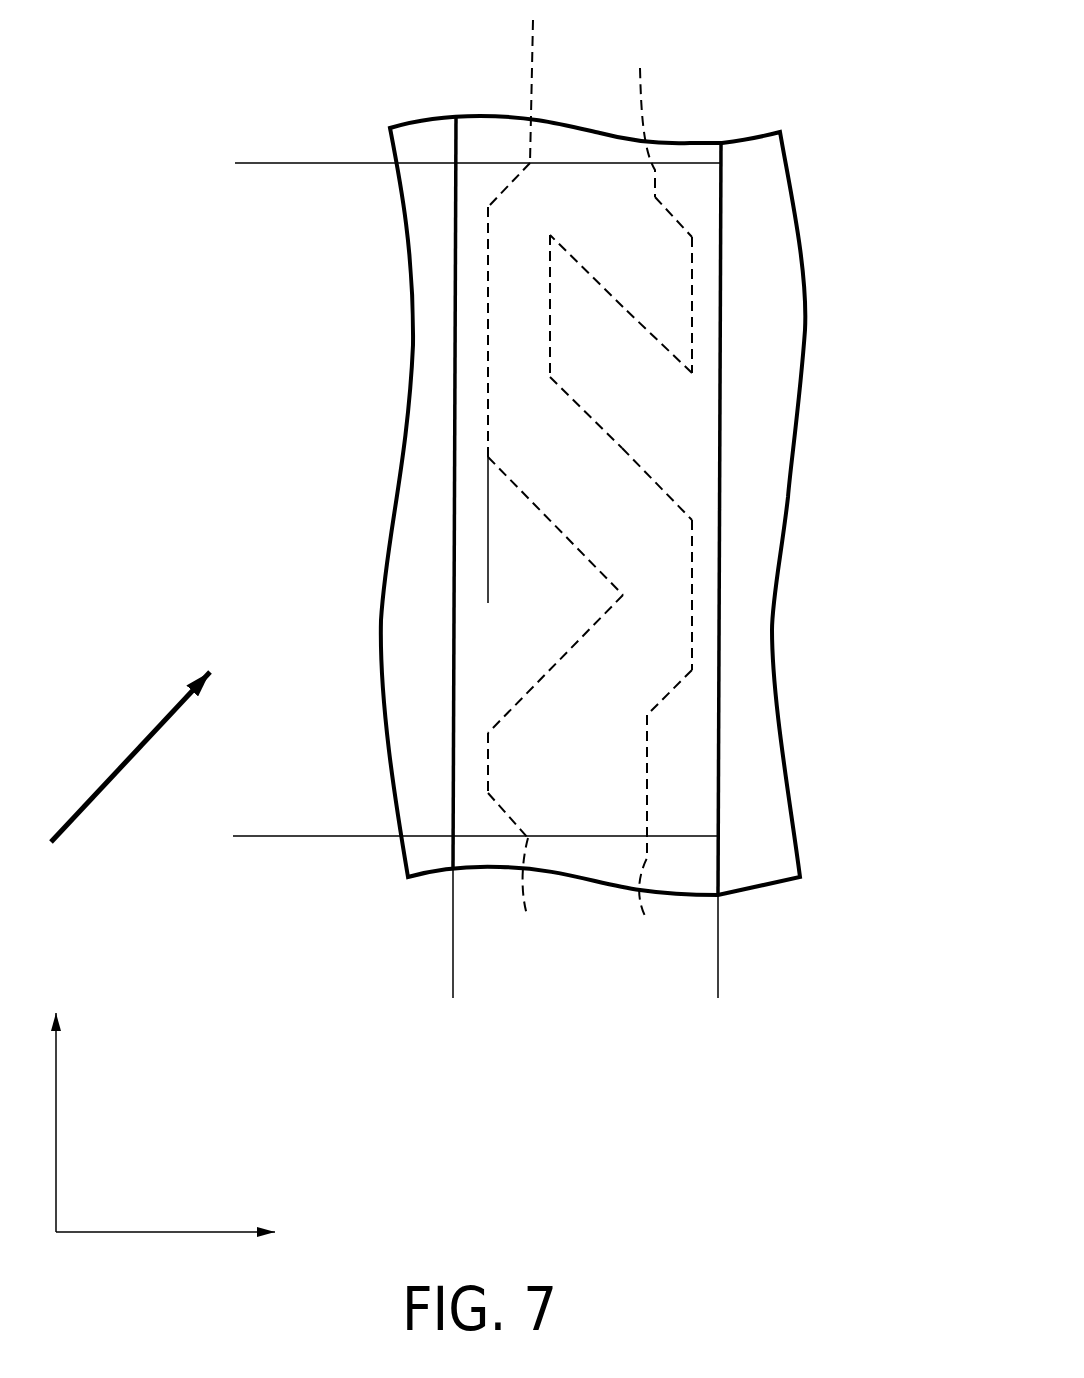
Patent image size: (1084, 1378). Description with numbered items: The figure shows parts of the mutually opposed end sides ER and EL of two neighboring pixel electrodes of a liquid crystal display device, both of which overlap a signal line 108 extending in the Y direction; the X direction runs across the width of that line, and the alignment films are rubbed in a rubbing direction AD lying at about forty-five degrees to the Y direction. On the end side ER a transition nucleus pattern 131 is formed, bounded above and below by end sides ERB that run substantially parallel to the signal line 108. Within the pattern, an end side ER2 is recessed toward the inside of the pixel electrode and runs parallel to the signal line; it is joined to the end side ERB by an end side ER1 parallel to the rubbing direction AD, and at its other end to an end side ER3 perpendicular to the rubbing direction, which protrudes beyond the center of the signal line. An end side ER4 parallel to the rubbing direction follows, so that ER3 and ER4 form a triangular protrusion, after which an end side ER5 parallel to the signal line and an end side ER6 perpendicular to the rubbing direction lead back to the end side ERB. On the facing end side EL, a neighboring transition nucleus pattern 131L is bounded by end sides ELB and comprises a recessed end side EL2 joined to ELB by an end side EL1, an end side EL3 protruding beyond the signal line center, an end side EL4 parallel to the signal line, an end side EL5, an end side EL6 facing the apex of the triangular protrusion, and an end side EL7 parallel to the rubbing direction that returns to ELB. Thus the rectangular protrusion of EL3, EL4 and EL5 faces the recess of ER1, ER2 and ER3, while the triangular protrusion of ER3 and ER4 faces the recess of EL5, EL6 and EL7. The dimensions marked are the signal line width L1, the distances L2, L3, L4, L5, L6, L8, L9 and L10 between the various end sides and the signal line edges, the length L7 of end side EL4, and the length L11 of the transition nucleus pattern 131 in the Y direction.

The signal line 108 is at (705, 157).
The transition nucleus pattern 131 is at (437, 612).
The neighboring transition nucleus pattern 131L is at (758, 450).
The end side ER is at (459, 480).
The end side ERB is at (533, 480).
The end side ER1 is at (508, 187).
The end side ER2 is at (488, 397).
The end side ER3 is at (537, 503).
The end side ER4 is at (532, 687).
The end side ER5 is at (488, 762).
The end side ER6 is at (507, 815).
The end side EL is at (724, 489).
The end side ELB is at (641, 496).
The end side EL1 is at (655, 197).
The end side EL2 is at (693, 265).
The end side EL3 is at (668, 352).
The end side EL4 is at (550, 297).
The end side EL5 is at (663, 490).
The end side EL6 is at (692, 547).
The end side EL7 is at (683, 685).
The width of the signal line L1 is at (718, 988).
The distance L2 is at (718, 783).
The distance L3 is at (663, 697).
The distance L4 is at (692, 595).
The distance L5 is at (623, 595).
The distance L6 is at (622, 448).
The length of the end side EL4 L7 is at (622, 307).
The distance L8 is at (550, 330).
The distance L9 is at (692, 238).
The distance L10 is at (757, 303).
The length of the transition nucleus pattern L11 is at (246, 163).
The rubbing direction AD is at (101, 783).
The X direction X is at (178, 1234).
The Y direction Y is at (57, 1100).